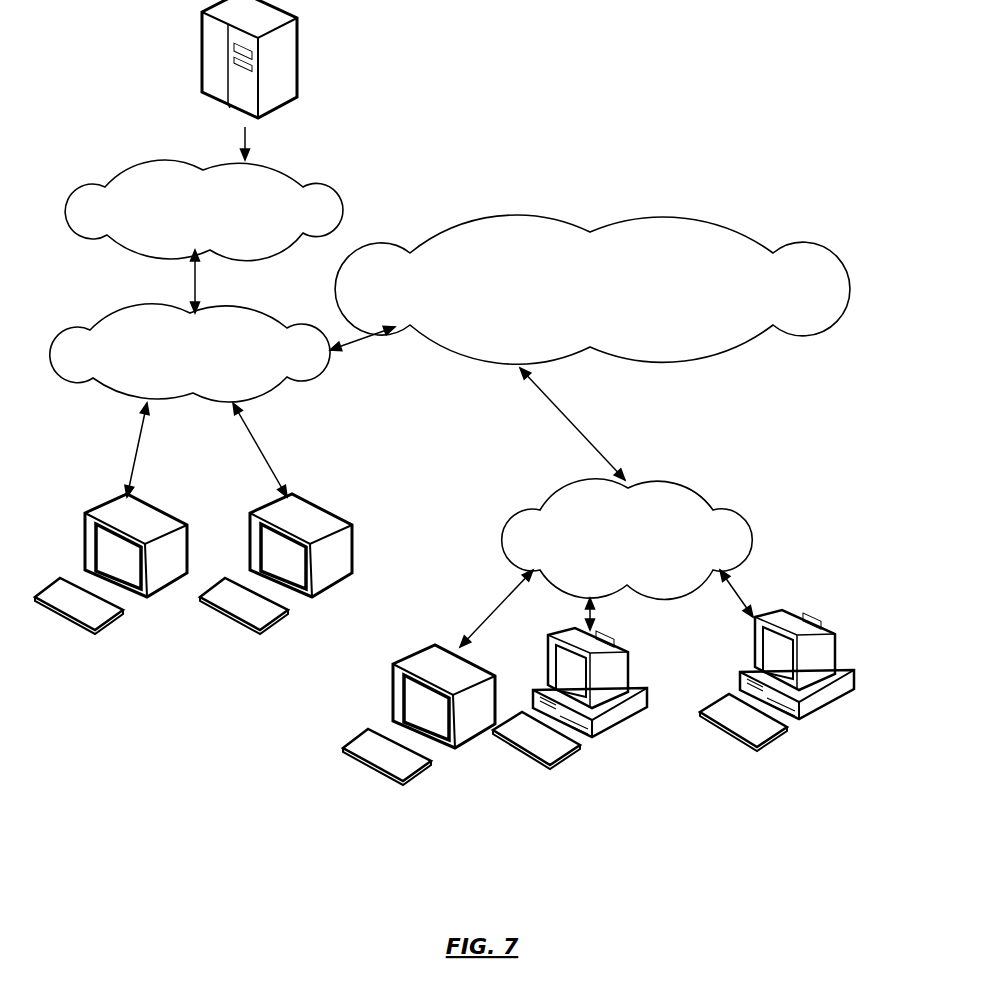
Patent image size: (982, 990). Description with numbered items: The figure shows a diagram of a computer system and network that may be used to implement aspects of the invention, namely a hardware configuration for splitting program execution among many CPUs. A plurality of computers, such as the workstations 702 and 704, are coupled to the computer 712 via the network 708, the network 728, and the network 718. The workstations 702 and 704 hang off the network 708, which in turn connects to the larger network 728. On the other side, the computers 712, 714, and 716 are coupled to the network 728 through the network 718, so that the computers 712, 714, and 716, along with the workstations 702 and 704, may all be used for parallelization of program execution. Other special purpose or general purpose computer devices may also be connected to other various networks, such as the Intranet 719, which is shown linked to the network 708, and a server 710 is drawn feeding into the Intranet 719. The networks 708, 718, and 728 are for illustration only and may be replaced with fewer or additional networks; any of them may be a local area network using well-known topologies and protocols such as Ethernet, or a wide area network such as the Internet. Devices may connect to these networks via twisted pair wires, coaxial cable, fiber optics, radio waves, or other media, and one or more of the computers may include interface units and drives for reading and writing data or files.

The workstation 702 is at (85, 500).
The workstation 704 is at (337, 500).
The network 708 is at (190, 353).
The server 710 is at (200, 52).
The computer 712 is at (392, 662).
The computer 714 is at (592, 740).
The computer 716 is at (810, 615).
The network 718 is at (627, 539).
The Intranet 719 is at (204, 210).
The network 728 is at (592, 289).